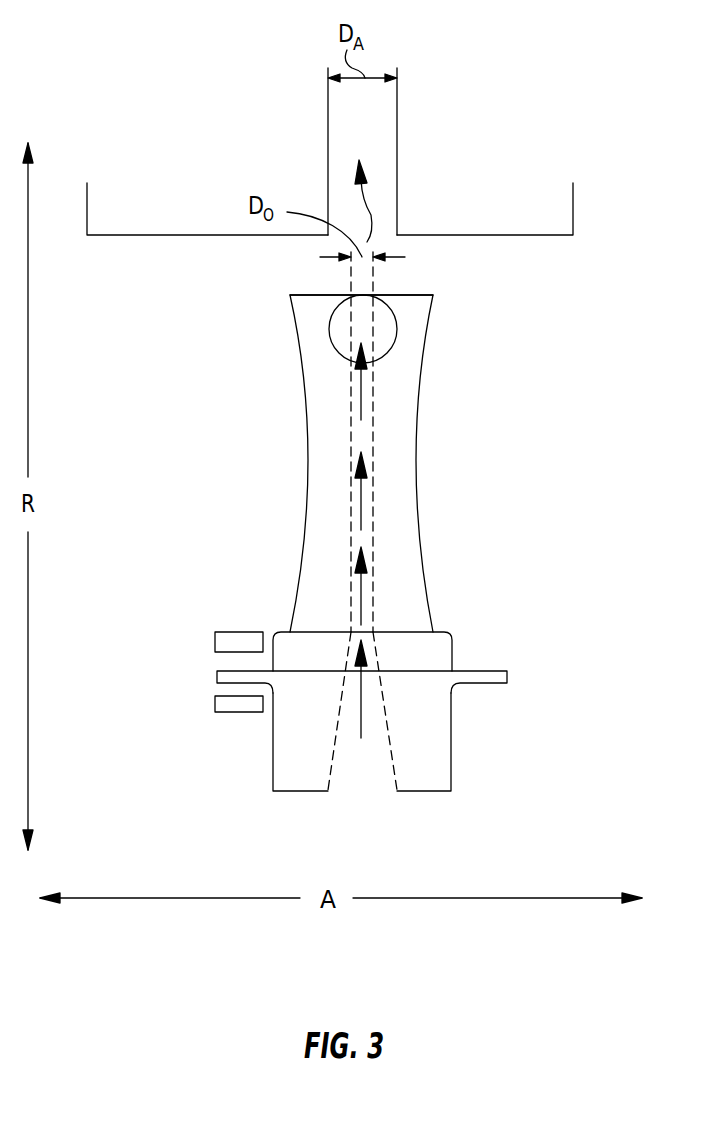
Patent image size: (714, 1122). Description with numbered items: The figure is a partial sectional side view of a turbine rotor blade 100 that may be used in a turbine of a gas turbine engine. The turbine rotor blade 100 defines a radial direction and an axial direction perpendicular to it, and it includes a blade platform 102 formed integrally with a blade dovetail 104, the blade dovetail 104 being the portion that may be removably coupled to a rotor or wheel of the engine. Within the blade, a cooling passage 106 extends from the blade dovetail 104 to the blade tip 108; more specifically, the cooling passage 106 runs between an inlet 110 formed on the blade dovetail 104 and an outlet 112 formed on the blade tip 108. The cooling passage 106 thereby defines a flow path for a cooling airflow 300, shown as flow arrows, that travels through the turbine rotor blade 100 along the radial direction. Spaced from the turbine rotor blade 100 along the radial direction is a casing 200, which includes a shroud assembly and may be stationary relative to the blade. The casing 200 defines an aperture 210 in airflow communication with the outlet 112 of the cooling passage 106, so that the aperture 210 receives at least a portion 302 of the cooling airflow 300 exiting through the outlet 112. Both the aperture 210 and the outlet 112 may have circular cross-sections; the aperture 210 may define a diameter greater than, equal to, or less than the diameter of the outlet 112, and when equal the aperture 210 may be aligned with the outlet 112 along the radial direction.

The turbine rotor blade 100 is at (417, 489).
The blade platform 102 is at (433, 648).
The blade dovetail 104 is at (424, 770).
The cooling passage 106 is at (350, 422).
The blade tip 108 is at (411, 295).
The inlet 110 is at (355, 776).
The outlet 112 is at (351, 296).
The casing 200 is at (544, 197).
The aperture 210 is at (350, 211).
The cooling airflow 300 is at (363, 698).
The portion of the cooling airflow 302 is at (372, 218).